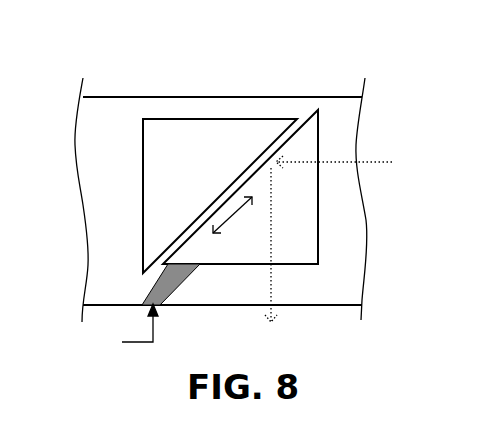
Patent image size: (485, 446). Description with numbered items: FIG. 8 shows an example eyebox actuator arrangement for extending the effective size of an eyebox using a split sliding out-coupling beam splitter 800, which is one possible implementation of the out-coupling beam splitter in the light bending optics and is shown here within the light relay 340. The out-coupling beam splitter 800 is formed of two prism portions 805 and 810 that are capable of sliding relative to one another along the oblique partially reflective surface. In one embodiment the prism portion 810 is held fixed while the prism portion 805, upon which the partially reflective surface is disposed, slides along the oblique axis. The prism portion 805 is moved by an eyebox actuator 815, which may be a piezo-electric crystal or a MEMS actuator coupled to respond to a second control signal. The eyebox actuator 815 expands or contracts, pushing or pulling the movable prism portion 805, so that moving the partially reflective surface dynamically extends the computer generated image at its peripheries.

The split sliding out-coupling beam splitter 800 is at (303, 66).
The light relay 340 is at (105, 97).
The prism portion 805 is at (220, 196).
The prism portion 810 is at (240, 187).
The eyebox actuator 815 is at (178, 288).